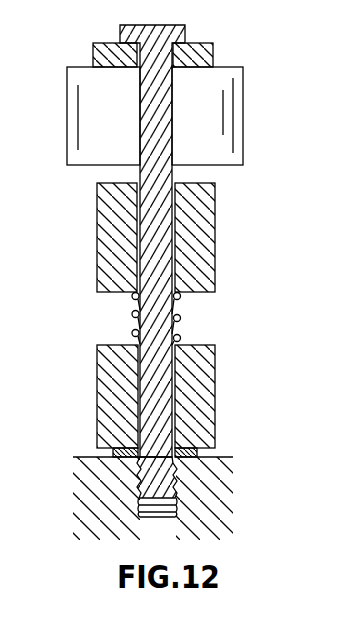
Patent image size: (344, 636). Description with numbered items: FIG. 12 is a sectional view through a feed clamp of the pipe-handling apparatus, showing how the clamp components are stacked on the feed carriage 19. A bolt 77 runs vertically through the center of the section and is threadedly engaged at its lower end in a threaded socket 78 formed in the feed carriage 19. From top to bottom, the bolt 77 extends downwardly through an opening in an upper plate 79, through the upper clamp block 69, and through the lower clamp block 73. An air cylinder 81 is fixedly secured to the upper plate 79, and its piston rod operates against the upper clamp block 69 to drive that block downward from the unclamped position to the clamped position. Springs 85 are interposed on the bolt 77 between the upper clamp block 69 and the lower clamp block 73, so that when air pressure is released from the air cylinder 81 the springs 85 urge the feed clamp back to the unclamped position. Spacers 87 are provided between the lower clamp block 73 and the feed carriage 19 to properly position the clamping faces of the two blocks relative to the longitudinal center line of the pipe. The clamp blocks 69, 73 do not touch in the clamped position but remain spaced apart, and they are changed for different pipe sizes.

The bolt 77 is at (163, 174).
The upper plate 79 is at (214, 53).
The air cylinder 81 is at (87, 158).
The upper clamp block 69 is at (205, 227).
The spring 85 is at (181, 340).
The lower clamp block 73 is at (205, 393).
The spacer 87 is at (198, 454).
The feed carriage 19 is at (222, 492).
The threaded socket 78 is at (143, 473).